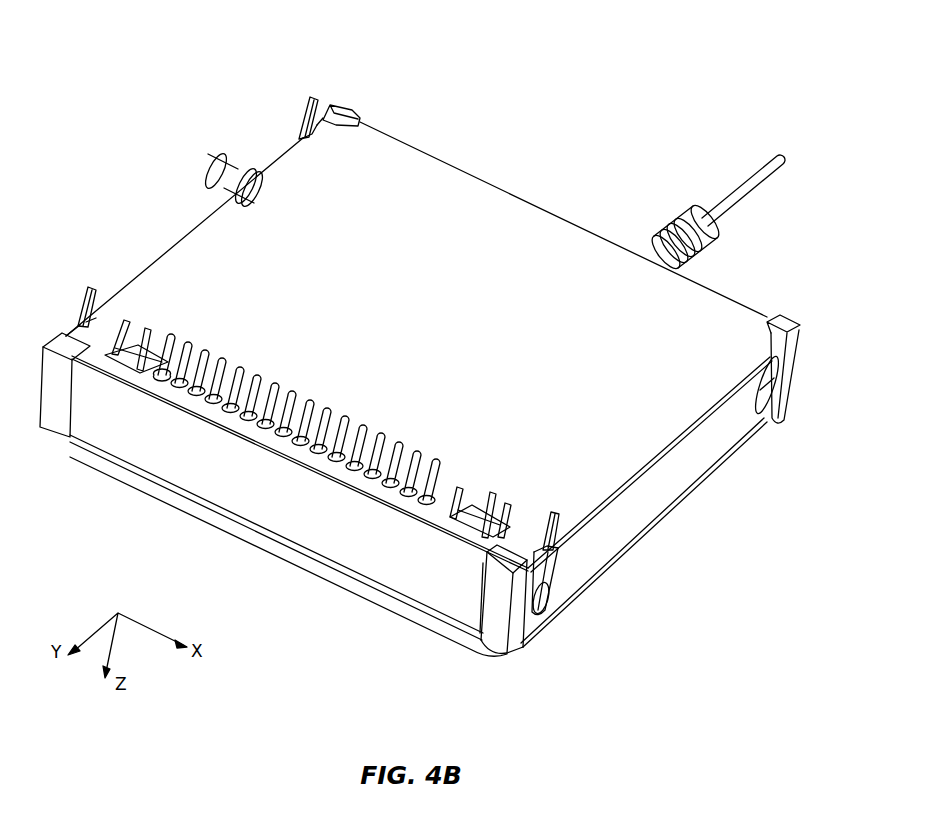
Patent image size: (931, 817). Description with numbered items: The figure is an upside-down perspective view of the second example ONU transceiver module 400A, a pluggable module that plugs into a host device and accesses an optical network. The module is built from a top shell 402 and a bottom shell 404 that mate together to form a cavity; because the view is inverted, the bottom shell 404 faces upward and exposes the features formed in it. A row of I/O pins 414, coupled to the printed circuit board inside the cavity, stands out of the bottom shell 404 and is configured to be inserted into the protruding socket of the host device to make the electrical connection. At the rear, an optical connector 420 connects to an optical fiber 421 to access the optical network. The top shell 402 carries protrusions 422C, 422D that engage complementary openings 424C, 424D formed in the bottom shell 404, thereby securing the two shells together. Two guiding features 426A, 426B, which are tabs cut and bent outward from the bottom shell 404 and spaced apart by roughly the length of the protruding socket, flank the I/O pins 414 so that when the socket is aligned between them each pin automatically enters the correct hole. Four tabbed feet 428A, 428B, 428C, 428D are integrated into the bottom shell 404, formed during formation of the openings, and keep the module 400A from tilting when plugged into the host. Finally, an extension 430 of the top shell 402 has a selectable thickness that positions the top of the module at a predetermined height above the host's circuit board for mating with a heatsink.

The ONU transceiver module 400A is at (565, 97).
The top shell 402 is at (507, 654).
The bottom shell 404 is at (695, 455).
The I/O pins 414 is at (502, 491).
The optical connector 420 is at (655, 246).
The optical fiber 421 is at (745, 190).
The protrusion 422C is at (766, 405).
The protrusion 422D is at (545, 592).
The opening 424C is at (783, 355).
The opening 424D is at (560, 553).
The guiding feature 426A is at (118, 320).
The guiding feature 426B is at (506, 527).
The tabbed foot 428A is at (82, 290).
The tabbed foot 428B is at (302, 133).
The tabbed foot 428C is at (797, 323).
The tabbed foot 428D is at (570, 528).
The extension 430 is at (260, 543).